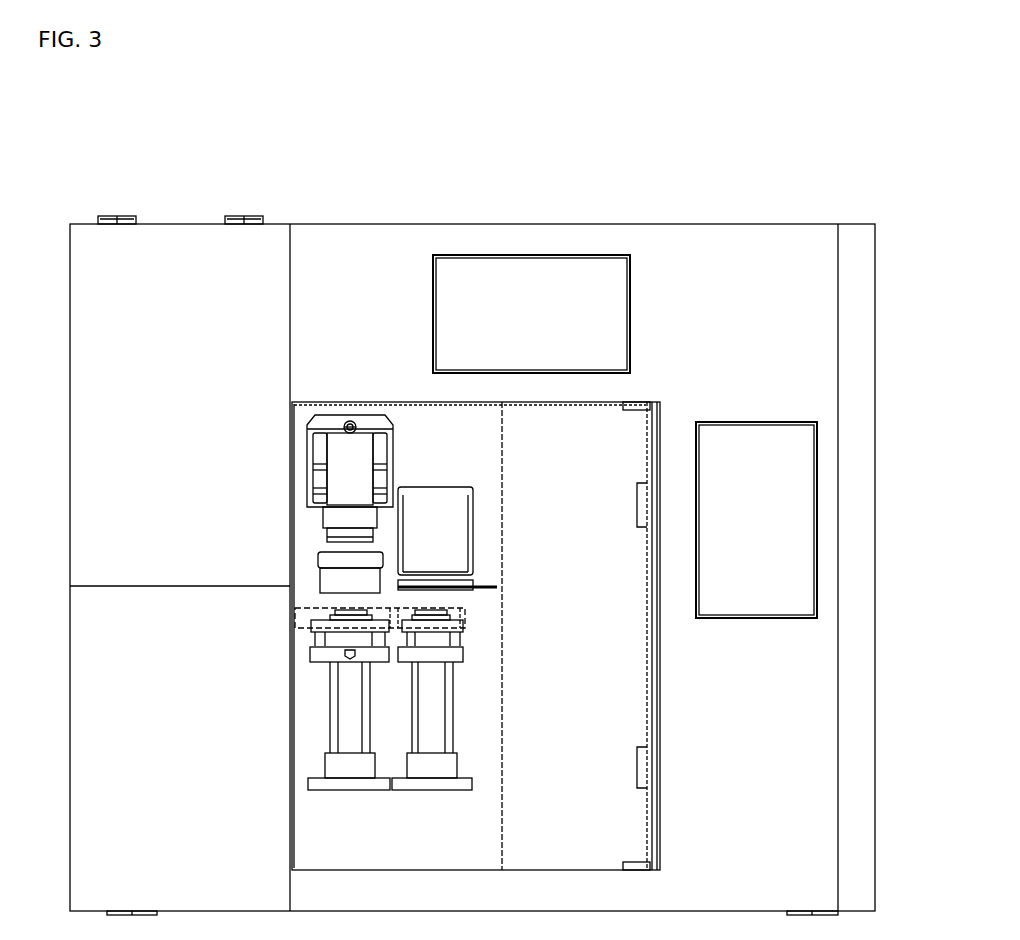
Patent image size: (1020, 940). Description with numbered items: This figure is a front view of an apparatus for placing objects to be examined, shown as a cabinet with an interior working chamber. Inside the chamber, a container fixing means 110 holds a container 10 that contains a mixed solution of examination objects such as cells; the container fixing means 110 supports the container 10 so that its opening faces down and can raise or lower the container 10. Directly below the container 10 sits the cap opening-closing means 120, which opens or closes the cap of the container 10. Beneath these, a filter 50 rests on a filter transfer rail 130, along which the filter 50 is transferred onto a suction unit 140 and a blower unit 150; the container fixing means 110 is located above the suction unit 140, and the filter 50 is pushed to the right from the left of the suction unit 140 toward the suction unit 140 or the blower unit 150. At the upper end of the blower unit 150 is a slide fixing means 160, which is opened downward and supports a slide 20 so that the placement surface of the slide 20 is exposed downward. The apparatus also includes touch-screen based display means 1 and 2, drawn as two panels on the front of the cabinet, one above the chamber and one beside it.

The display means 1 is at (545, 276).
The display means 2 is at (790, 484).
The container 10 is at (340, 476).
The slide 20 is at (487, 585).
The filter 50 is at (462, 613).
The container fixing means 110 is at (390, 438).
The cap opening-closing means 120 is at (318, 558).
The filter transfer rail 130 is at (318, 603).
The suction unit 140 is at (333, 640).
The blower unit 150 is at (460, 640).
The slide fixing means 160 is at (463, 532).